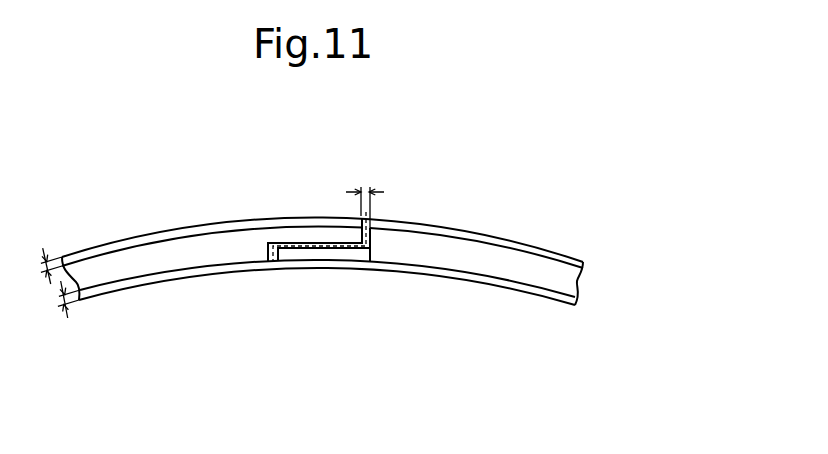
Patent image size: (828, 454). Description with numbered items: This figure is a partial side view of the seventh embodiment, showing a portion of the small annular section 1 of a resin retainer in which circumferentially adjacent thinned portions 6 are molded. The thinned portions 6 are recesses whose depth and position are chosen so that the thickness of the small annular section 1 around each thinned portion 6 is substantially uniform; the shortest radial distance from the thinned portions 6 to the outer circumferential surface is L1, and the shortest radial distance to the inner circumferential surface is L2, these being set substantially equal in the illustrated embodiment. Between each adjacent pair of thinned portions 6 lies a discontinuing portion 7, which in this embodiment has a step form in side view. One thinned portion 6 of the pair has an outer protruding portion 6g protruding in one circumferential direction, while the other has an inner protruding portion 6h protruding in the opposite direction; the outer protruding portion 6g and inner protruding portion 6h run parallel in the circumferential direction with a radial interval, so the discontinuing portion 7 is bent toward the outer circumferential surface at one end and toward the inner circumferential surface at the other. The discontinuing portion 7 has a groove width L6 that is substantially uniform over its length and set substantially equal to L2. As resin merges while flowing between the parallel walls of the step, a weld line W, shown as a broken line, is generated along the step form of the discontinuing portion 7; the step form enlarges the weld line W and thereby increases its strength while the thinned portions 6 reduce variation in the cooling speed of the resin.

The small annular section 1 is at (517, 205).
The thinned portion 6 is at (153, 243).
The outer protruding portion 6g is at (322, 232).
The inner protruding portion 6h is at (303, 250).
The discontinuing portion 7 is at (323, 240).
The weld line W is at (296, 243).
The shortest radial distance to outer circumferential surface L1 is at (39, 267).
The shortest radial distance to inner circumferential surface L2 is at (54, 308).
The groove width L6 is at (365, 195).